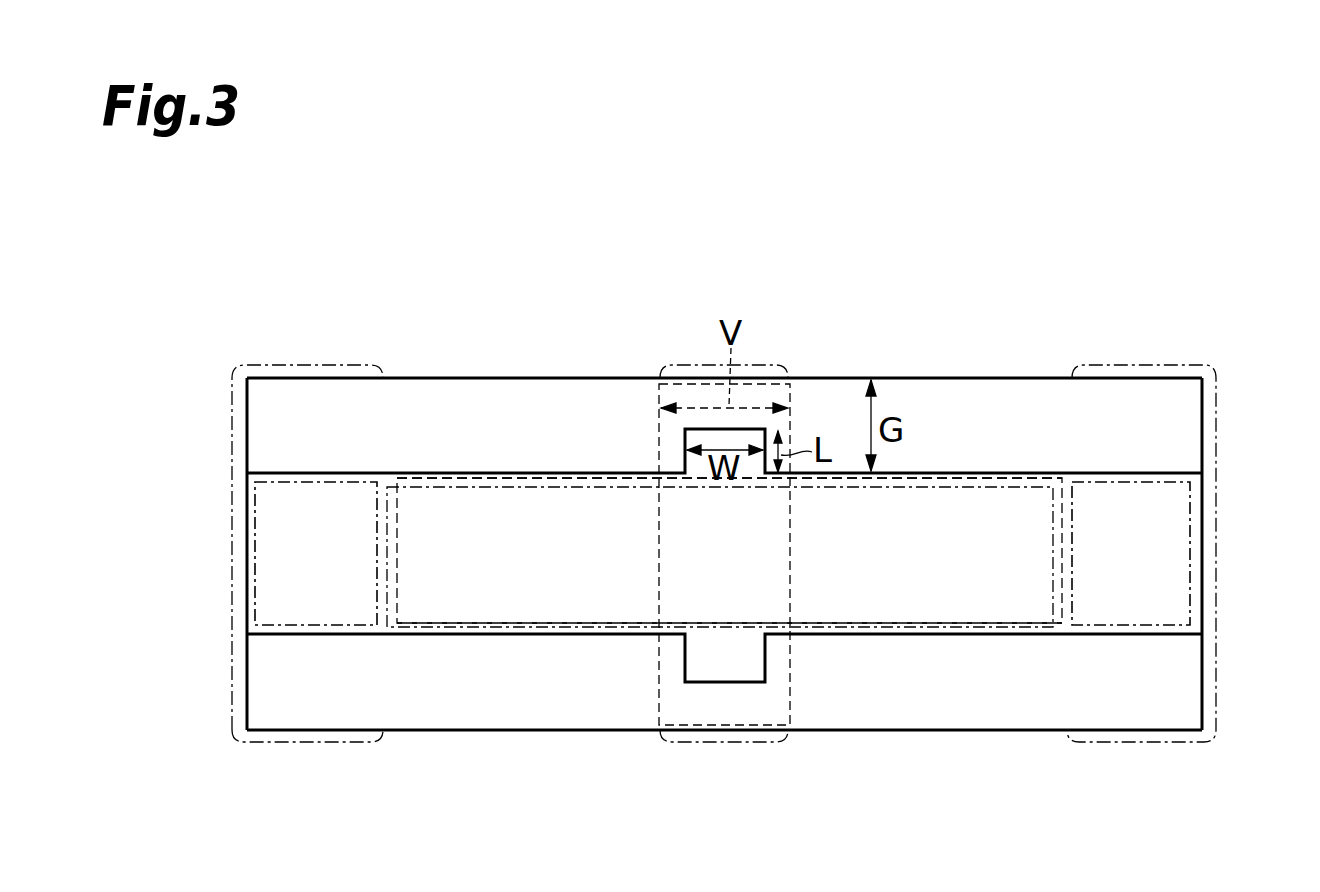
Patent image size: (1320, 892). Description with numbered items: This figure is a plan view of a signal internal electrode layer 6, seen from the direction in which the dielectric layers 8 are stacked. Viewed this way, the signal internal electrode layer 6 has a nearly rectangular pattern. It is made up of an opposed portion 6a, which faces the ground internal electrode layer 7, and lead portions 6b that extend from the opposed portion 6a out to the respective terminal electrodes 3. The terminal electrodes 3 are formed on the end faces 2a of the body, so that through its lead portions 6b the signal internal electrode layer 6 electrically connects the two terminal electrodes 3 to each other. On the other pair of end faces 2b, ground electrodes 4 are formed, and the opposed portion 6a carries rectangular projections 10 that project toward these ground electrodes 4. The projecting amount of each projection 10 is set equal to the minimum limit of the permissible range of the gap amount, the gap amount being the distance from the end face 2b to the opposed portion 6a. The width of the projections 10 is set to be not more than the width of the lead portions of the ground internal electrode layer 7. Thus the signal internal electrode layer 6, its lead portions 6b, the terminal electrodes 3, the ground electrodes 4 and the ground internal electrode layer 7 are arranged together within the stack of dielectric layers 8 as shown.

The end face 2a is at (247, 416).
The end face 2b is at (848, 378).
The terminal electrode 3 is at (238, 518).
The ground electrode 4 is at (680, 365).
The signal internal electrode layer 6 is at (938, 518).
The opposed portion 6a is at (577, 493).
The lead portion 6b is at (347, 493).
The ground internal electrode layer 7 is at (1018, 512).
The dielectric layer 8 is at (485, 390).
The projection 10 is at (765, 660).